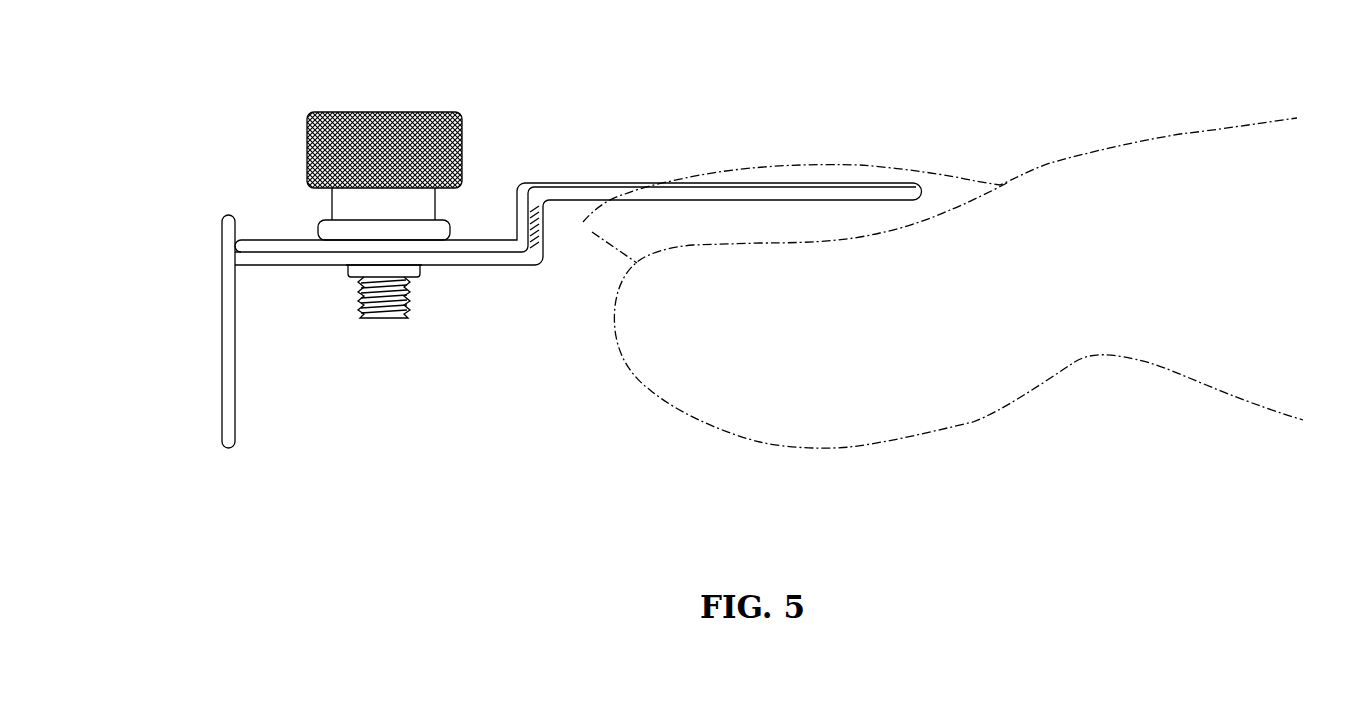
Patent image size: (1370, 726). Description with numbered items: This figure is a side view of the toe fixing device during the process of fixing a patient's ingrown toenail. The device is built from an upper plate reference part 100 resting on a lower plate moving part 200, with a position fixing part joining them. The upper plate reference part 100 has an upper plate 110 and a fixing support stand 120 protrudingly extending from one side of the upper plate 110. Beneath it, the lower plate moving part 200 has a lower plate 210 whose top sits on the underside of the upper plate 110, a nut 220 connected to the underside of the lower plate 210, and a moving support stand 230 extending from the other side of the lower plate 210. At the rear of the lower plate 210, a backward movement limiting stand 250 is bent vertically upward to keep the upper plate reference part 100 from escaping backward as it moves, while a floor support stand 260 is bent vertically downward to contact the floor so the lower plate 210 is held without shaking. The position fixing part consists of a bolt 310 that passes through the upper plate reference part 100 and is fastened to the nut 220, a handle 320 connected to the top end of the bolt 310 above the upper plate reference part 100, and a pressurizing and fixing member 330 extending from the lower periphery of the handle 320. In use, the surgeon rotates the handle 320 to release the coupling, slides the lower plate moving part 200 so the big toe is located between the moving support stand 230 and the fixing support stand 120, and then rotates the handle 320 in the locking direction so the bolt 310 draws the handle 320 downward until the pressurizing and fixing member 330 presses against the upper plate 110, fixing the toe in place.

The upper plate reference part 100 is at (537, 147).
The upper plate 110 is at (265, 240).
The fixing support stand 120 is at (636, 188).
The lower plate moving part 200 is at (522, 273).
The lower plate 210 is at (282, 266).
The nut 220 is at (420, 270).
The moving support stand 230 is at (721, 172).
The backward movement limiting stand 250 is at (222, 225).
The floor support stand 260 is at (222, 396).
The bolt 310 is at (384, 320).
The handle 320 is at (385, 112).
The pressurizing and fixing member 330 is at (452, 228).